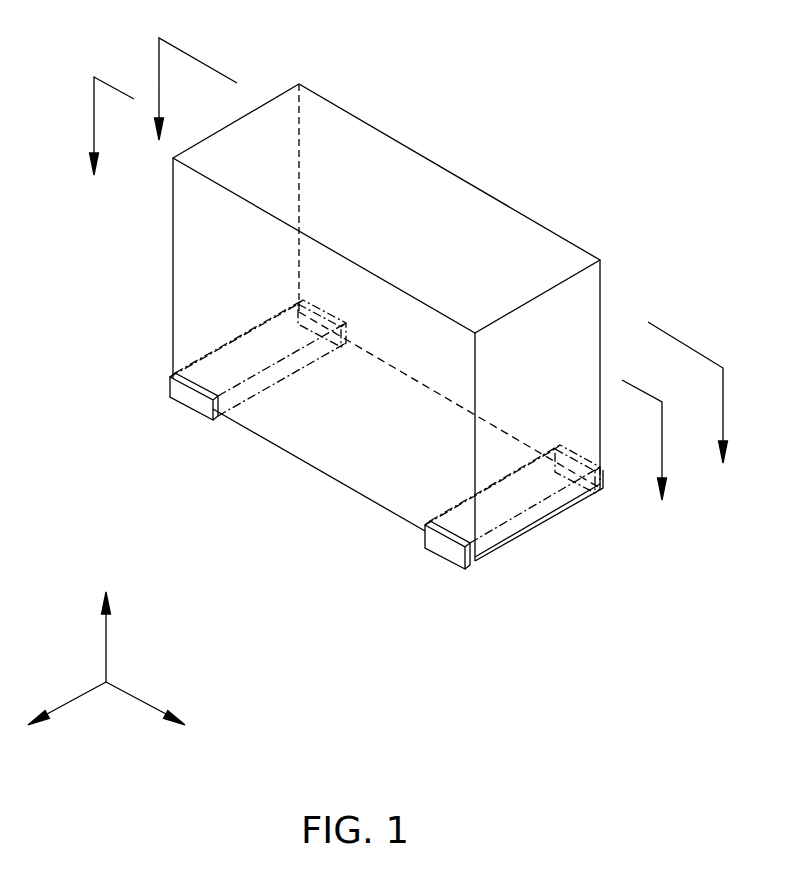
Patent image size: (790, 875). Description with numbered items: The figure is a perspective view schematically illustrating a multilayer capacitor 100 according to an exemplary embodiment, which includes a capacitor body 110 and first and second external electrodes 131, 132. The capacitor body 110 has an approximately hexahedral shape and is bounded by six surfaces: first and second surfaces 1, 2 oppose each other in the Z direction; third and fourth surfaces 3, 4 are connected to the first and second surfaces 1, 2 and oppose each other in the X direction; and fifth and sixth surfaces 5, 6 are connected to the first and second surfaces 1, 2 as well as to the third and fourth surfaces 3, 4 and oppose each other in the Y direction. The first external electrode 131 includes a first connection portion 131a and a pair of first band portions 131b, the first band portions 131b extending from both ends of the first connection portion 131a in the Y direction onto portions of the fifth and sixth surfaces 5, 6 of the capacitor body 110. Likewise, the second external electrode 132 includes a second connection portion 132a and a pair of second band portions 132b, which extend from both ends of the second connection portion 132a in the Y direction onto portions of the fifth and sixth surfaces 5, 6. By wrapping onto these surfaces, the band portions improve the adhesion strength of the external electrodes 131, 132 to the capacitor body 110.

The multilayer capacitor 100 is at (302, 19).
The capacitor body 110 is at (412, 185).
The first surface 1 is at (393, 465).
The second surface 2 is at (500, 207).
The third surface 3 is at (197, 263).
The fourth surface 4 is at (565, 315).
The fifth surface 5 is at (336, 410).
The sixth surface 6 is at (545, 260).
The first external electrode 131 is at (257, 478).
The first connection portion 131a is at (258, 392).
The first band portion 131b is at (192, 400).
The second external electrode 132 is at (533, 611).
The second connection portion 132a is at (520, 508).
The second band portion 132b is at (447, 545).